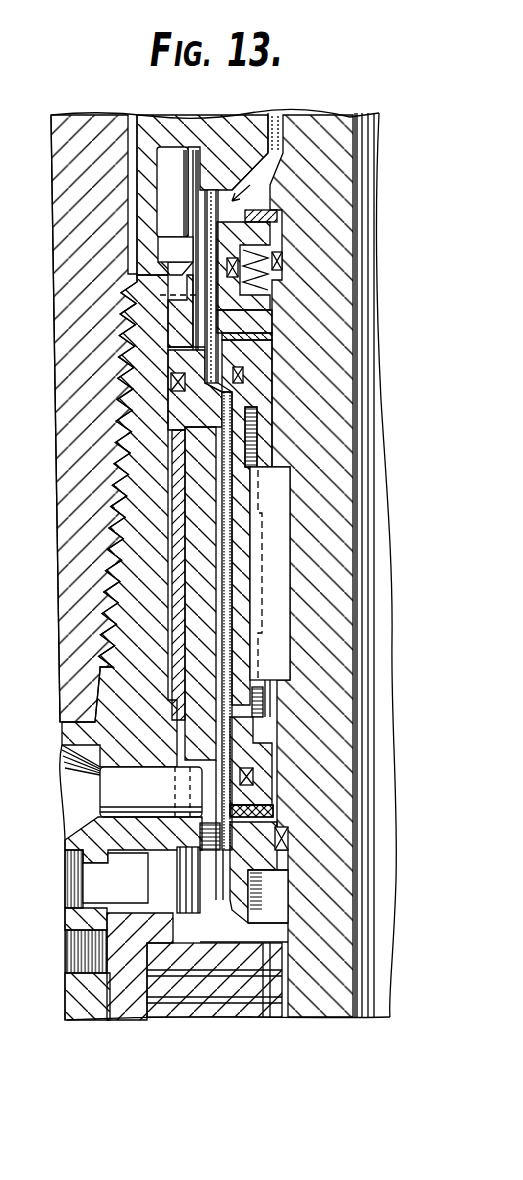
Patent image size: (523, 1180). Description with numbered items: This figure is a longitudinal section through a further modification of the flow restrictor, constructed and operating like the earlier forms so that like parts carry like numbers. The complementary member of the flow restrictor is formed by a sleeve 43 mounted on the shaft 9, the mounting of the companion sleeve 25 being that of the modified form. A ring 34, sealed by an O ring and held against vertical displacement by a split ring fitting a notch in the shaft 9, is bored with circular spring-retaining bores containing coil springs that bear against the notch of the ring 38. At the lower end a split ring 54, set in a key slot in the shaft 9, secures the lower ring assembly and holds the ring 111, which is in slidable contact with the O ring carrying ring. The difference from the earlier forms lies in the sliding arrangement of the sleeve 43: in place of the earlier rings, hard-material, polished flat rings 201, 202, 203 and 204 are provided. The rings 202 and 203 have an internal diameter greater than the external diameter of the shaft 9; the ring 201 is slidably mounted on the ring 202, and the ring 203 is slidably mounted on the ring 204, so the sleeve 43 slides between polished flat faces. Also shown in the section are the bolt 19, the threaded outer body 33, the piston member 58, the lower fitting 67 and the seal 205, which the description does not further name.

The shaft 9 is at (338, 527).
The bolt 19 is at (165, 157).
The sleeve 25 is at (170, 442).
The outer body 33 is at (137, 607).
The ring 34 is at (263, 235).
The ring 38 is at (268, 312).
The sleeve 43 is at (250, 457).
The split ring 54 is at (277, 900).
The piston 58 is at (282, 627).
The fitting 67 is at (222, 958).
The ring 111 is at (270, 862).
The flat ring 201 is at (272, 333).
The flat ring 202 is at (272, 342).
The flat ring 203 is at (265, 808).
The flat ring 204 is at (267, 818).
The seal ring 205 is at (287, 840).